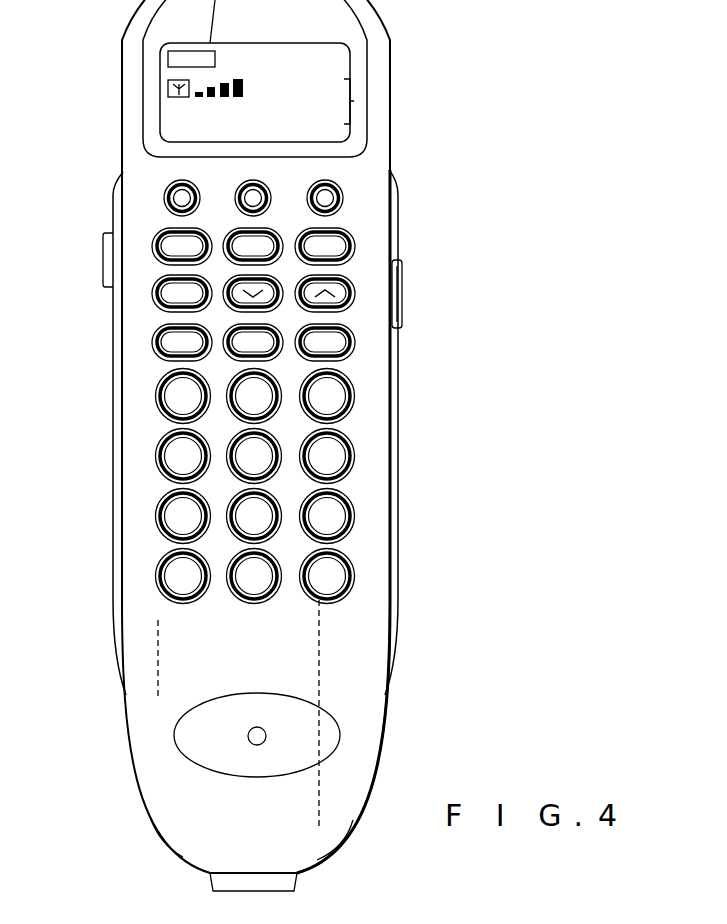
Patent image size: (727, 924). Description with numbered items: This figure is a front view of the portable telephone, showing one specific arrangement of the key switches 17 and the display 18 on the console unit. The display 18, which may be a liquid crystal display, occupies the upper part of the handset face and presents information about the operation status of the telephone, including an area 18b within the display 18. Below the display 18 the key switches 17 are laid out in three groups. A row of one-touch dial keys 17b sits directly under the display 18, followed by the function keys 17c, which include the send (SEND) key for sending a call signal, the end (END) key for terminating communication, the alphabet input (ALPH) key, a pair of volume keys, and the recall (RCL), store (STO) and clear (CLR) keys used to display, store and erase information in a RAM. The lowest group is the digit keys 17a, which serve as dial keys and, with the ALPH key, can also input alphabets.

The key switches 17 is at (452, 377).
The digit keys 17a is at (366, 372).
The one-touch dial keys 17b is at (362, 170).
The function keys 17c is at (362, 226).
The display 18 is at (160, 80).
The telephone number display area 18b is at (352, 84).